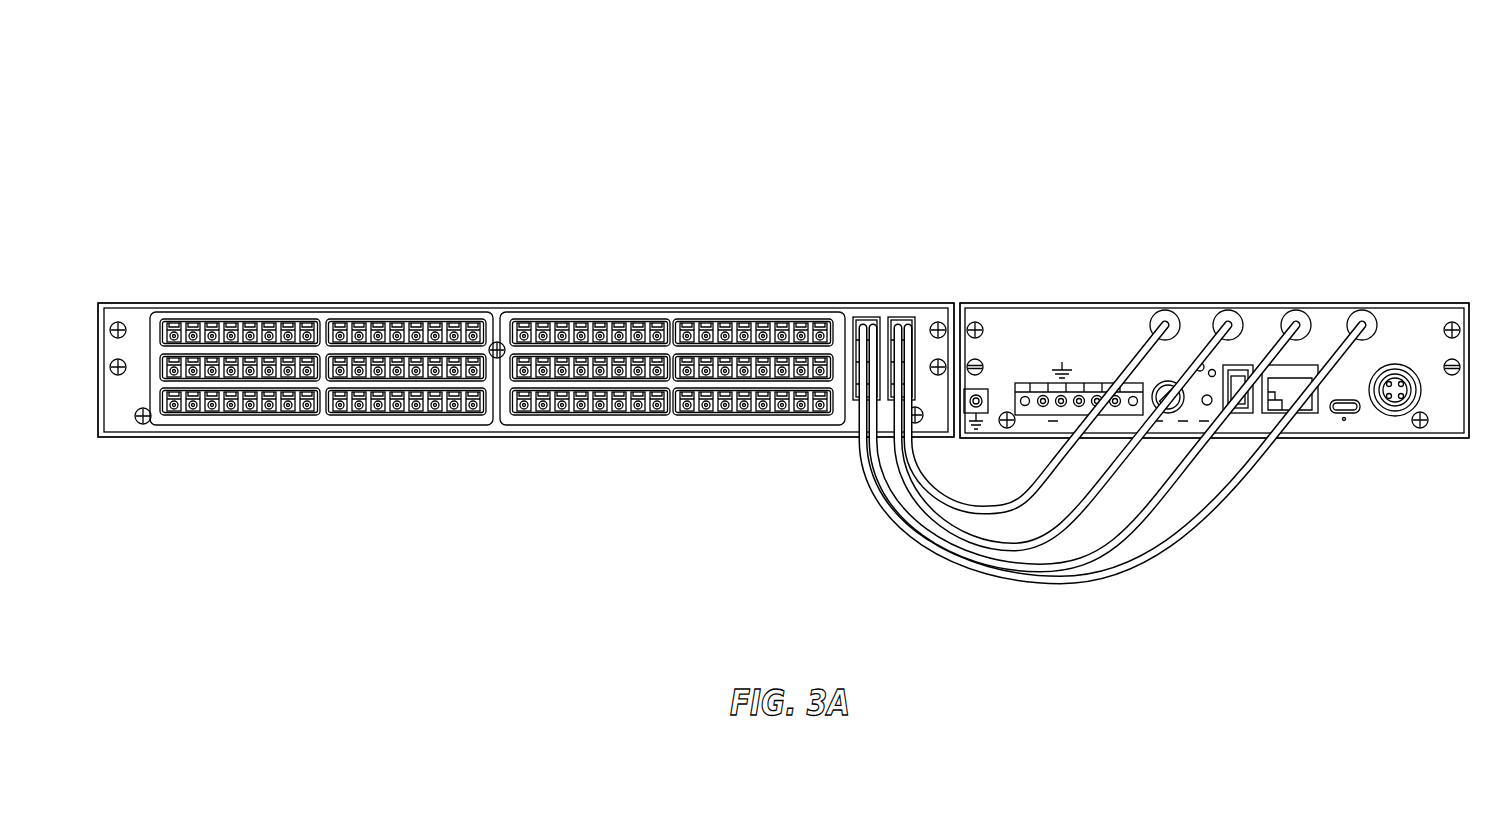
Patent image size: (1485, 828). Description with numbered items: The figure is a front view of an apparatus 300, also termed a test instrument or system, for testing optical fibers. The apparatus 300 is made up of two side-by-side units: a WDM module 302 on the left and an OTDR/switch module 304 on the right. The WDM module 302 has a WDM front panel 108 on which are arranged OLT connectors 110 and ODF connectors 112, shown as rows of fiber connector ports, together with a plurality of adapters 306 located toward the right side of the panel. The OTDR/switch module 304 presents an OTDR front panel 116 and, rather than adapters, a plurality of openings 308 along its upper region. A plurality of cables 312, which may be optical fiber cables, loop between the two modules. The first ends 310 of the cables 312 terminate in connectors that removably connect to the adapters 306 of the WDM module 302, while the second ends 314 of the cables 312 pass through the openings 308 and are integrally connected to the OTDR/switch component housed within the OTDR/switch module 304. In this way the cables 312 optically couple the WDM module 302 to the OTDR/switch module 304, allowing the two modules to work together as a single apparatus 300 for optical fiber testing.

The apparatus 300 is at (746, 56).
The WDM module 302 is at (352, 284).
The OTDR/switch module 304 is at (1094, 278).
The adapters 306 is at (873, 311).
The first ends 310 is at (908, 311).
The OTDR front panel 116 is at (1017, 308).
The openings 308 is at (1228, 305).
The second ends 314 is at (1305, 305).
The OLT connectors 110 is at (238, 413).
The ODF connectors 112 is at (694, 413).
The WDM front panel 108 is at (505, 437).
The cables 312 is at (1193, 520).